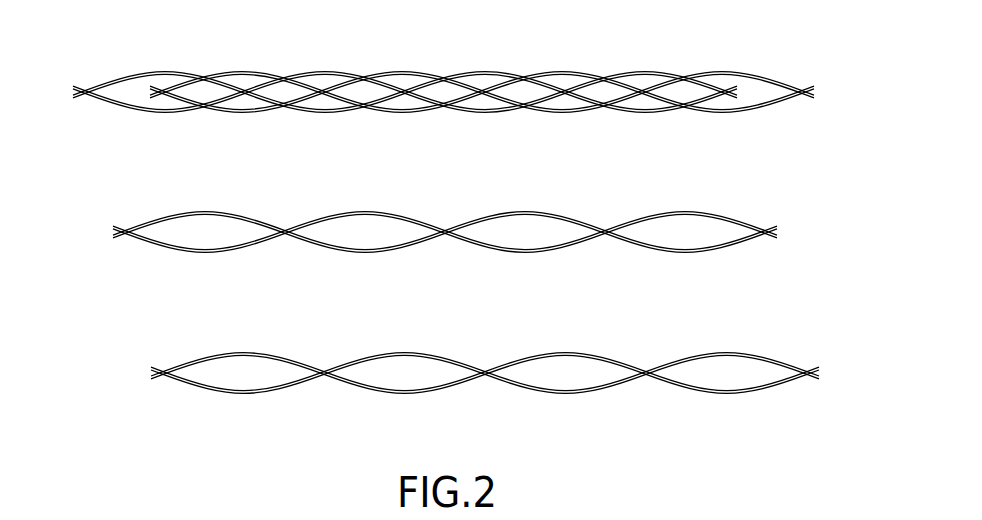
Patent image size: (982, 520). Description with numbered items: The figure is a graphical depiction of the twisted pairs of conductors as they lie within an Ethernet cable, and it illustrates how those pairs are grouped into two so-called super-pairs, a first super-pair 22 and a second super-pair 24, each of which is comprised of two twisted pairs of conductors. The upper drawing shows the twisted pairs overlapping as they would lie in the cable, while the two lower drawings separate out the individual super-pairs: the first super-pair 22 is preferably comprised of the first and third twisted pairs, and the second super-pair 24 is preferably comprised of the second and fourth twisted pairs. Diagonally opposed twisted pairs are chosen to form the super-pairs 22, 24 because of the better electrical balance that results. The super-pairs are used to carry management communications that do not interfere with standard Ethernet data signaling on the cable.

The first super-pair 22 is at (502, 234).
The second super-pair 24 is at (429, 373).